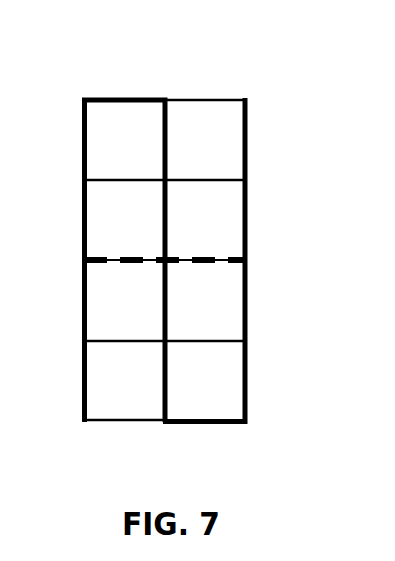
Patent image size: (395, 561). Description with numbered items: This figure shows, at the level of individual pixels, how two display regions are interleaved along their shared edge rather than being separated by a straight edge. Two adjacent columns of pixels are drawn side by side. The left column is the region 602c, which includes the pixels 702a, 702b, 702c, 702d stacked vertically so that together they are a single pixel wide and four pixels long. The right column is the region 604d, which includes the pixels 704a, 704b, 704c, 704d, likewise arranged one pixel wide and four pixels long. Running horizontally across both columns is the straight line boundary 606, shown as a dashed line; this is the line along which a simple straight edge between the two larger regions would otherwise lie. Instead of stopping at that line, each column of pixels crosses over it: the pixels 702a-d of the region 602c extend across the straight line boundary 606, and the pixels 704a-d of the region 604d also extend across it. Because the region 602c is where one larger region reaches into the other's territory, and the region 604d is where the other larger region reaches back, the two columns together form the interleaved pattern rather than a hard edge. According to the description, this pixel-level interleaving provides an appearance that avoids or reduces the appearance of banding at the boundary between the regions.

The region 602c is at (120, 98).
The region 604d is at (248, 407).
The straight line boundary 606 is at (212, 262).
The pixel 702a is at (125, 141).
The pixel 702b is at (125, 220).
The pixel 702c is at (125, 301).
The pixel 702d is at (125, 380).
The pixel 704a is at (205, 141).
The pixel 704b is at (205, 220).
The pixel 704c is at (205, 301).
The pixel 704d is at (205, 380).